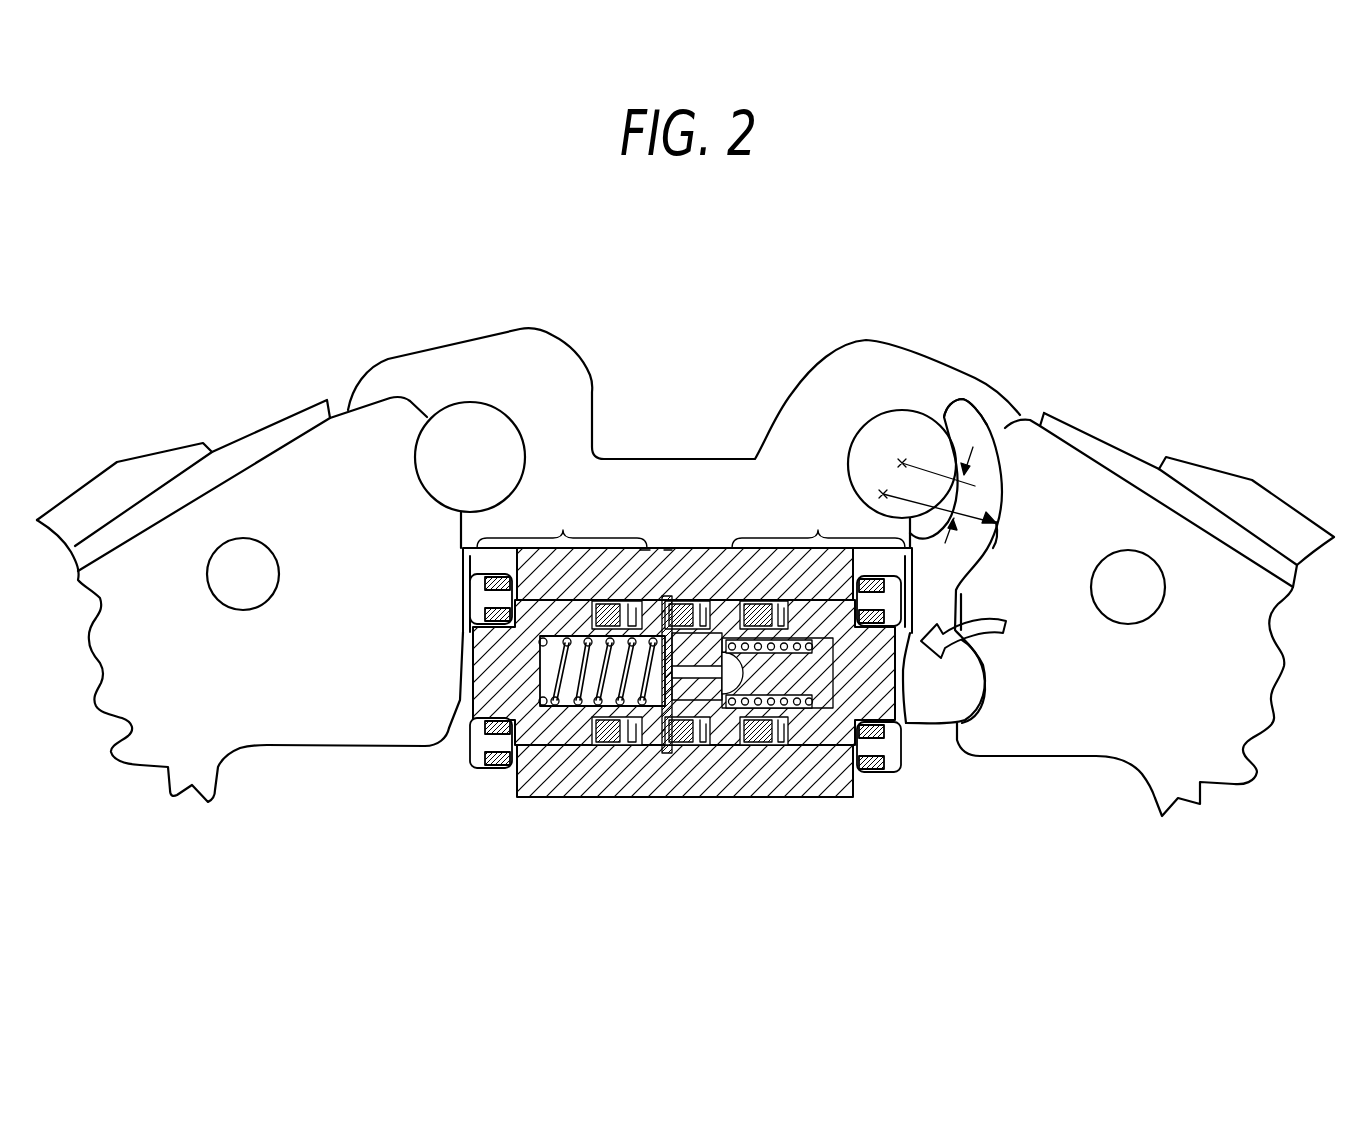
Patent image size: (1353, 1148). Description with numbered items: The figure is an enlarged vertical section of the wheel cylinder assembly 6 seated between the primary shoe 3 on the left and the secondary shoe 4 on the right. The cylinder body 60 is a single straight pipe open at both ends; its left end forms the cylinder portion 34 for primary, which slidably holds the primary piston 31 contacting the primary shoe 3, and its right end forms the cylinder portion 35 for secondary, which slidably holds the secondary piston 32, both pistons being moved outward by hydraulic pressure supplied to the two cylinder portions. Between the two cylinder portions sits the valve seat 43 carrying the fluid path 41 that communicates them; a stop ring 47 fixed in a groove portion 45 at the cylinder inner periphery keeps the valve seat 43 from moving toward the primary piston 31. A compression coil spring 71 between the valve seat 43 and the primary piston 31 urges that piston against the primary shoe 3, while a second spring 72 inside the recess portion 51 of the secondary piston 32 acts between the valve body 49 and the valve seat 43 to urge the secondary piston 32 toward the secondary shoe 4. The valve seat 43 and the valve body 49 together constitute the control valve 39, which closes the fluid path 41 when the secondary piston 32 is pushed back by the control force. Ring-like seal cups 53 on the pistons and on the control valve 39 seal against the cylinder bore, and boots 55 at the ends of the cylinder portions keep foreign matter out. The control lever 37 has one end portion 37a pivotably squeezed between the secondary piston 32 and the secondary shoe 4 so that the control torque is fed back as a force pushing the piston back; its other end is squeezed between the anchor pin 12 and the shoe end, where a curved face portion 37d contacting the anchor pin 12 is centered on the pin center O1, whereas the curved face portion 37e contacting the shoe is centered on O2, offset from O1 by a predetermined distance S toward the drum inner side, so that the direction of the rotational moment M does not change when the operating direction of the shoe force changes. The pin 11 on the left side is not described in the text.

The primary shoe 3 is at (327, 503).
The secondary shoe 4 is at (1101, 494).
The wheel cylinder assembly 6 is at (711, 548).
The left pivot shaft 11 is at (473, 450).
The anchor pin 12 is at (960, 420).
The primary piston 31 is at (478, 680).
The secondary piston 32 is at (903, 685).
The cylinder portion for primary 34 is at (562, 520).
The cylinder portion for secondary 35 is at (818, 520).
The control lever 37 is at (1003, 380).
The one end portion of the control lever 37a is at (958, 686).
The curved face portion 37d is at (944, 414).
The curved face portion 37e is at (1000, 542).
The control valve 39 is at (738, 745).
The fluid path 41 is at (665, 752).
The valve seat 43 is at (714, 745).
The groove portion 45 is at (668, 550).
The stop ring 47 is at (645, 550).
The valve body 49 is at (842, 714).
The recess portion 51 is at (790, 707).
The seal cups 53 is at (607, 744).
The boots 55 is at (480, 758).
The cylinder body 60 is at (752, 482).
The spring 71 is at (562, 706).
The spring 72 is at (815, 682).
The center of the anchor pin O1 is at (900, 458).
The center of curvature O2 is at (883, 490).
The predetermined distance S is at (998, 500).
The rotational moment M is at (979, 631).